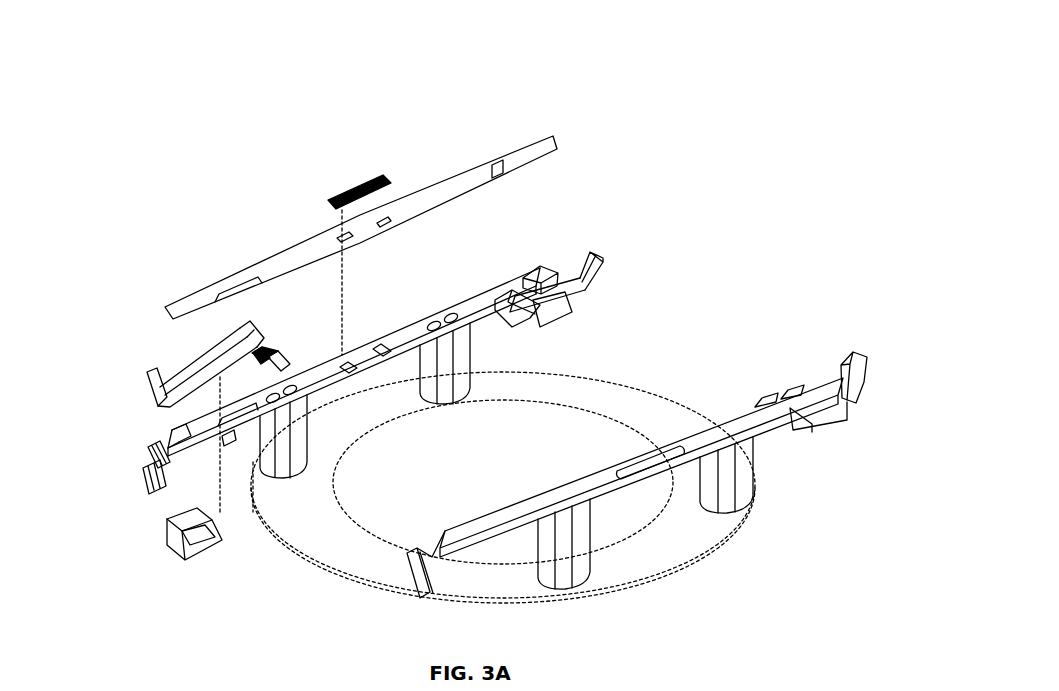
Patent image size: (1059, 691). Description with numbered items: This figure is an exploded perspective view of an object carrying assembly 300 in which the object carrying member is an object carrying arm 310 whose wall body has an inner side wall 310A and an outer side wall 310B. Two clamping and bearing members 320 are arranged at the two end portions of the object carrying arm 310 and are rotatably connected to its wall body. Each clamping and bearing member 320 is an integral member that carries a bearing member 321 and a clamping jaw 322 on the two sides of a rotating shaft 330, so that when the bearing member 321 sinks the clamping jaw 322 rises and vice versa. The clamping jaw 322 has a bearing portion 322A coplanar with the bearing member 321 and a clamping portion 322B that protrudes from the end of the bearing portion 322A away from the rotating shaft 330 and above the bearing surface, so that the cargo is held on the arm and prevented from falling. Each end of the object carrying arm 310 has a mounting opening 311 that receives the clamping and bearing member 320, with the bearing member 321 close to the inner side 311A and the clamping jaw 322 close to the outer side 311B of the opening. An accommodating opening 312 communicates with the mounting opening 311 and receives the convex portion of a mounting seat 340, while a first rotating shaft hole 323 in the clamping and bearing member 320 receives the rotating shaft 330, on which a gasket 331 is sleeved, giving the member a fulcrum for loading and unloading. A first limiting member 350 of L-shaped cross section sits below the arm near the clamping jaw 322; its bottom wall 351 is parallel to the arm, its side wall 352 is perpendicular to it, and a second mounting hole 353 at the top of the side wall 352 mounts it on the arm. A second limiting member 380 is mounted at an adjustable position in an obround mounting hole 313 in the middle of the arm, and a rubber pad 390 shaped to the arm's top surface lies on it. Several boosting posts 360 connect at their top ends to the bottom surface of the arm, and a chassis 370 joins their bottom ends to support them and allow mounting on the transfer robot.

The object carrying assembly 300 is at (470, 58).
The object carrying arm 310 is at (478, 292).
The inner side wall 310A is at (377, 370).
The outer side wall 310B is at (410, 324).
The mounting opening 311 is at (193, 437).
The inner side of the mounting opening 311A is at (224, 407).
The outer side of the mounting opening 311B is at (164, 451).
The accommodating opening 312 is at (224, 434).
The obround mounting hole 313 is at (374, 346).
The clamping and bearing member 320 is at (146, 381).
The bearing member 321 is at (509, 307).
The clamping jaw 322 is at (597, 302).
The bearing portion 322A is at (560, 312).
The clamping portion 322B is at (604, 256).
The first rotating shaft hole 323 is at (224, 338).
The rotating shaft 330 is at (526, 288).
The gasket 331 is at (266, 350).
The mounting seat 340 is at (156, 484).
The first limiting member 350 is at (160, 535).
The bottom wall 351 is at (207, 547).
The side wall 352 is at (205, 533).
The second mounting hole 353 is at (200, 514).
The boosting posts 360 is at (755, 487).
The chassis 370 is at (678, 548).
The second limiting member 380 is at (340, 188).
The rubber pad 390 is at (562, 140).